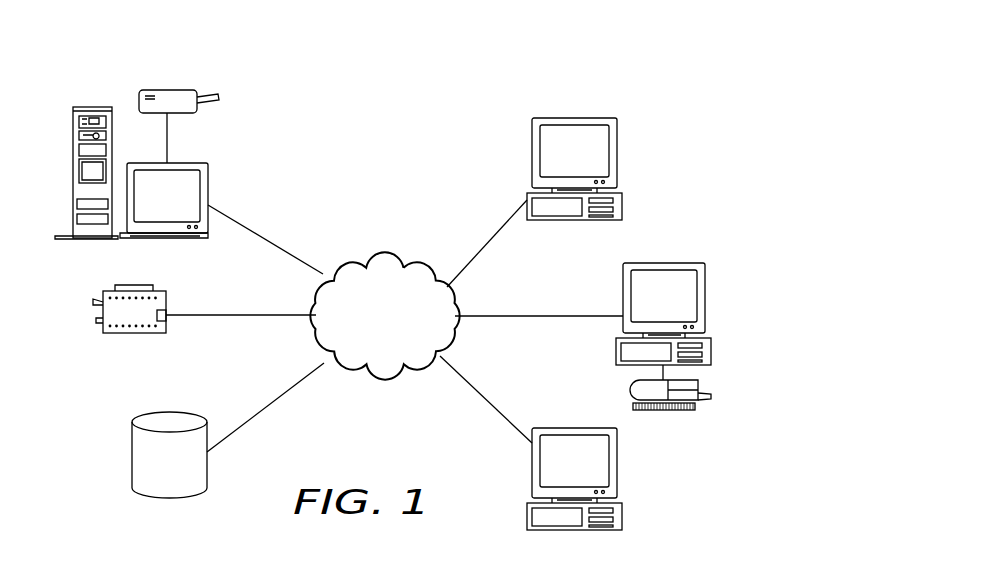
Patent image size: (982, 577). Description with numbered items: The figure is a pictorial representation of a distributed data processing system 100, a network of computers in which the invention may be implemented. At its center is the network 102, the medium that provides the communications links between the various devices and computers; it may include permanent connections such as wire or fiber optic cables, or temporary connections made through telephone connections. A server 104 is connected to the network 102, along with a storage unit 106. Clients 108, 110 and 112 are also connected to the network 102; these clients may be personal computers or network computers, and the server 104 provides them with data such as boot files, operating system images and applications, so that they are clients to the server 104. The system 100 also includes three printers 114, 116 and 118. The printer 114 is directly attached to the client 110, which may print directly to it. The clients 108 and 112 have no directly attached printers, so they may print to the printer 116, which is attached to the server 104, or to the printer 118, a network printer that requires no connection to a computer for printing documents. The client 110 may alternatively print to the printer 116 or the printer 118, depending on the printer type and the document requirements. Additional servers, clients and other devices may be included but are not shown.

The distributed data processing system 100 is at (688, 107).
The network 102 is at (405, 330).
The server 104 is at (188, 209).
The storage unit 106 is at (188, 470).
The client 108 is at (593, 165).
The client 110 is at (684, 307).
The client 112 is at (593, 475).
The printer 114 is at (700, 391).
The printer 116 is at (166, 90).
The printer 118 is at (132, 333).